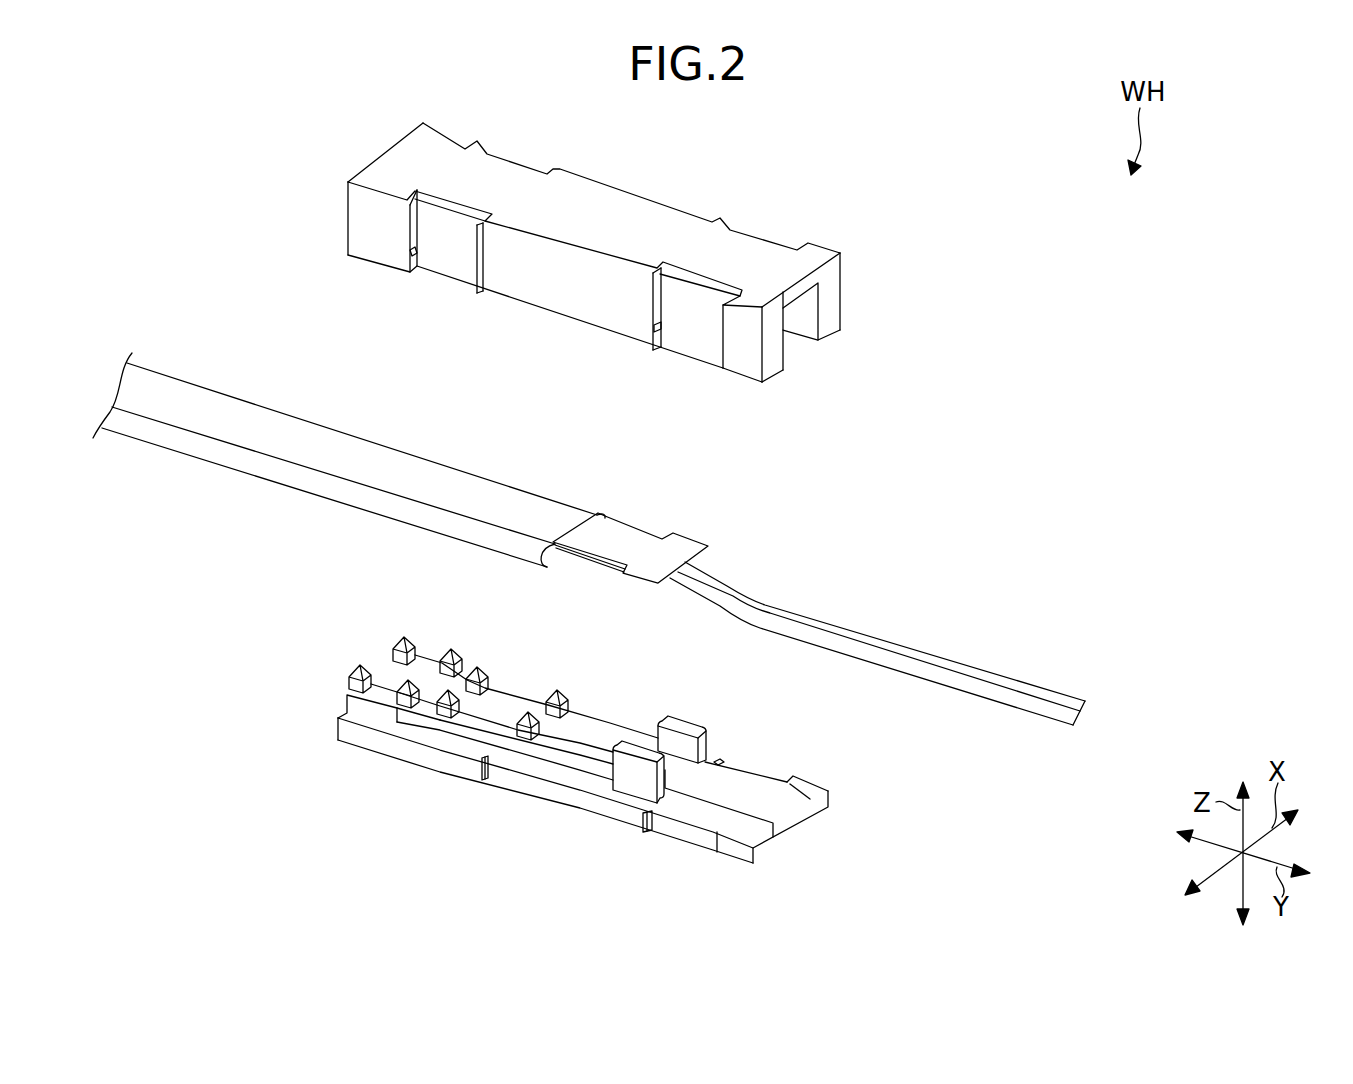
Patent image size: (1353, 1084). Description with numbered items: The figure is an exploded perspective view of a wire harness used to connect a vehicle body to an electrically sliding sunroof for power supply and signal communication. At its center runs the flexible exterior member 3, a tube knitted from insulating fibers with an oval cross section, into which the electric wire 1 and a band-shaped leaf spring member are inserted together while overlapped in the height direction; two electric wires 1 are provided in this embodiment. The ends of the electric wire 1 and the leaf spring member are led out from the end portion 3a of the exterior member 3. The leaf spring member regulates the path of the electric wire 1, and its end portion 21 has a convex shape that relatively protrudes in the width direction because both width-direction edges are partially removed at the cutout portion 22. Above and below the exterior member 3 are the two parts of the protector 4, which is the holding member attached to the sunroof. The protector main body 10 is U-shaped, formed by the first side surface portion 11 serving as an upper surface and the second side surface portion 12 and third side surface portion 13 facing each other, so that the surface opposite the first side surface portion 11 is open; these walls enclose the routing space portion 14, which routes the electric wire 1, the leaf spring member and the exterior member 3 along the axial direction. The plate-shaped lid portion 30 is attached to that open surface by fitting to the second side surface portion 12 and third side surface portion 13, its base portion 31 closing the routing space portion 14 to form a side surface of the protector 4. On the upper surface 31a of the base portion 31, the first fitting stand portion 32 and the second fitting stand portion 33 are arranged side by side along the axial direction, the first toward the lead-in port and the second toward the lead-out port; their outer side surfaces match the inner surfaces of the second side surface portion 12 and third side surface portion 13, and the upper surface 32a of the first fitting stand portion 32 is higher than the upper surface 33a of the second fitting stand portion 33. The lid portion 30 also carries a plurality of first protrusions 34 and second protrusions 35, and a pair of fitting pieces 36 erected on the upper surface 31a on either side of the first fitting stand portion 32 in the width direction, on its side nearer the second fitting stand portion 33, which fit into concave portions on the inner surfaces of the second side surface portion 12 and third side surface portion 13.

The electric wire 1 is at (930, 660).
The exterior member 3 is at (147, 382).
The end portion of the exterior member 3a is at (528, 492).
The protector 4 is at (168, 558).
The protector main body 10 is at (363, 235).
The first side surface portion 11 is at (622, 200).
The second side surface portion 12 is at (566, 295).
The third side surface portion 13 is at (842, 287).
The routing space portion 14 is at (797, 325).
The end portion of the leaf spring member 21 is at (675, 557).
The cutout portion 22 is at (630, 530).
The lid portion 30 is at (340, 732).
The base portion 31 is at (565, 790).
The upper surface of the base portion 31a is at (683, 814).
The first fitting stand portion 32 is at (594, 743).
The upper surface of the first fitting stand portion 32a is at (485, 780).
The second fitting stand portion 33 is at (737, 795).
The upper surface of the second fitting stand portion 33a is at (768, 803).
The first protrusions 34 is at (357, 693).
The second protrusions 35 is at (448, 678).
The fitting pieces 36 is at (632, 777).